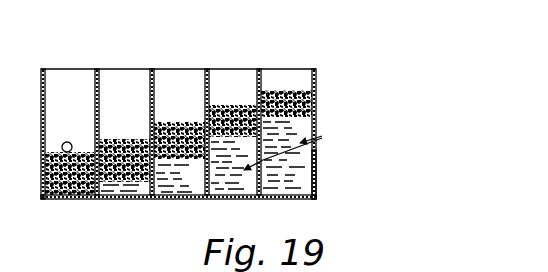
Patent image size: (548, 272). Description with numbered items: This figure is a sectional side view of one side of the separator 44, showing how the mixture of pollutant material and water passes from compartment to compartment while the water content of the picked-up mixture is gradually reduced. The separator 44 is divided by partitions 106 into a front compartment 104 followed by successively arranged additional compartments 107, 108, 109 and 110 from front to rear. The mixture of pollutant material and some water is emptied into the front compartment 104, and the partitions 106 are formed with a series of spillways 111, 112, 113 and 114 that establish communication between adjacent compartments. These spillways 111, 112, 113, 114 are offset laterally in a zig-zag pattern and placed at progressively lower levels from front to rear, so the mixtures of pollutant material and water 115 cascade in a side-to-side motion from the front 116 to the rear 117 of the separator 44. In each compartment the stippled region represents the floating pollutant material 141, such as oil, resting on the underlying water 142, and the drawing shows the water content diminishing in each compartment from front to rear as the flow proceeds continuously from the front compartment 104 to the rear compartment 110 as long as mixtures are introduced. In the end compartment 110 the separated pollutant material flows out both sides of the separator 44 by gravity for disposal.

The separator 44 is at (184, 116).
The front compartment 104 is at (283, 105).
The partitions 106 is at (268, 88).
The additional compartment 107 is at (220, 77).
The additional compartment 108 is at (170, 78).
The additional compartment 109 is at (113, 82).
The end compartment 110 is at (56, 78).
The spillway 111 is at (257, 90).
The spillway 112 is at (205, 109).
The spillway 113 is at (150, 127).
The spillway 114 is at (95, 140).
The mixtures of pollutant material and water 115 is at (298, 146).
The front of separator 116 is at (315, 178).
The rear of separator 117 is at (41, 160).
The floating pollutant material 141 is at (315, 98).
The underlying water 142 is at (287, 194).